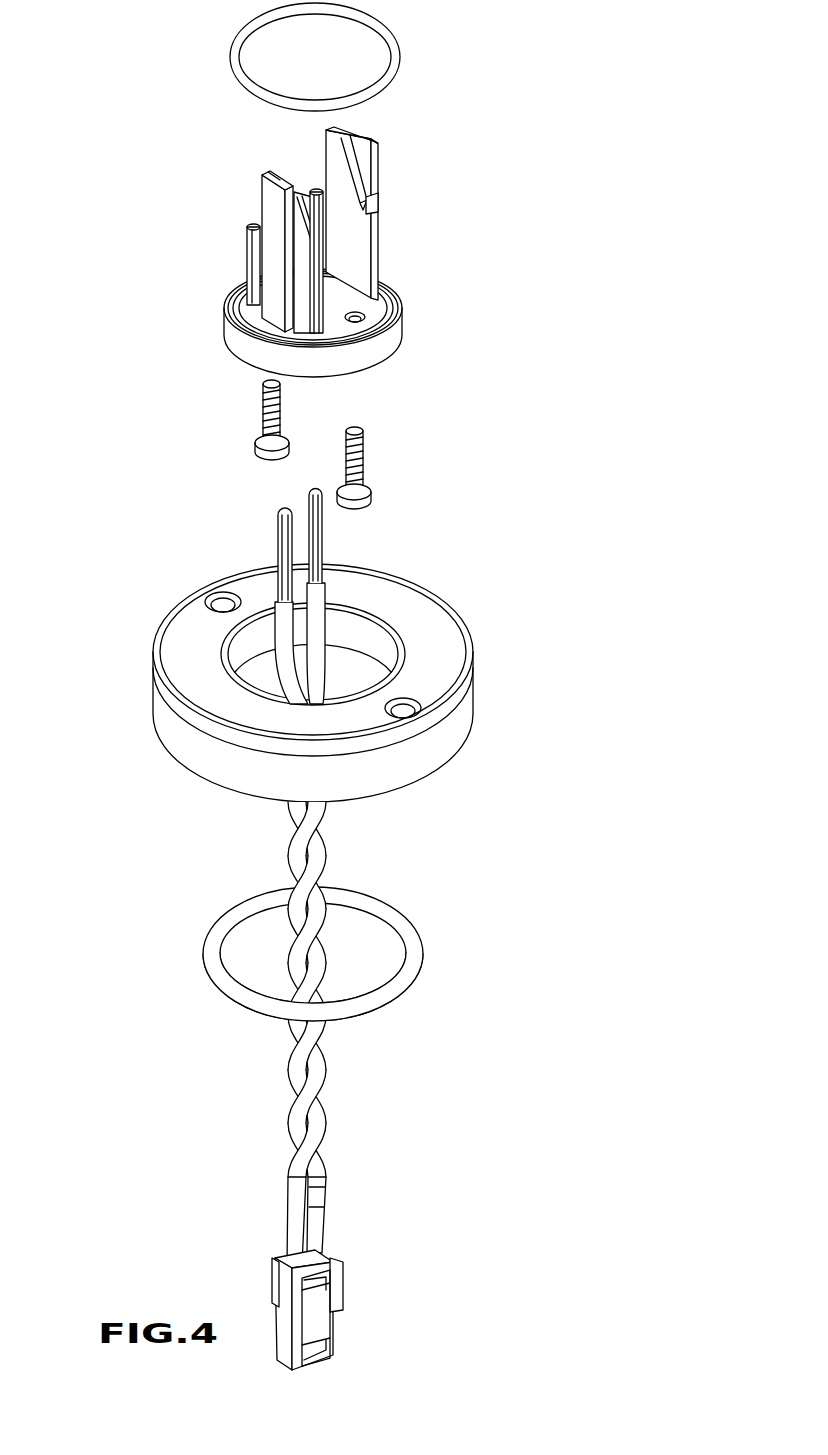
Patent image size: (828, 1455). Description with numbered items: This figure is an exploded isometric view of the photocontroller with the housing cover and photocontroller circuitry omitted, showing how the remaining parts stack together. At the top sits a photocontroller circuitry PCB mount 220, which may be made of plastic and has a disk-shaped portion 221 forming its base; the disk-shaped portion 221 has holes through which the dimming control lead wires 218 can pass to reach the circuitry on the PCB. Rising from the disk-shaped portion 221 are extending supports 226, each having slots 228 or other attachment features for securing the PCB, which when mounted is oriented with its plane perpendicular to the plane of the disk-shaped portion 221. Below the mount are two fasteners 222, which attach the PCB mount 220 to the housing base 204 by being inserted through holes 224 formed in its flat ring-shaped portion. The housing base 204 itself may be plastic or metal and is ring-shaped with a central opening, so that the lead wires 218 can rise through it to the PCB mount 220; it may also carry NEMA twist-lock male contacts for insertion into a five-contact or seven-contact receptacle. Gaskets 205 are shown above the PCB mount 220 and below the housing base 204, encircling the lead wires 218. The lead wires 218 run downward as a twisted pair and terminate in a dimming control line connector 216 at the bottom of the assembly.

The housing base 204 is at (427, 597).
The gaskets 205 is at (398, 42).
The dimming control line connector 216 is at (342, 1283).
The lead wires 218 is at (327, 1087).
The photocontroller circuitry PCB mount 220 is at (537, 153).
The disk-shaped portion 221 is at (398, 287).
The fasteners 222 is at (265, 413).
The holes 224 is at (208, 603).
The extending supports 226 is at (380, 217).
The slots 228 is at (315, 187).